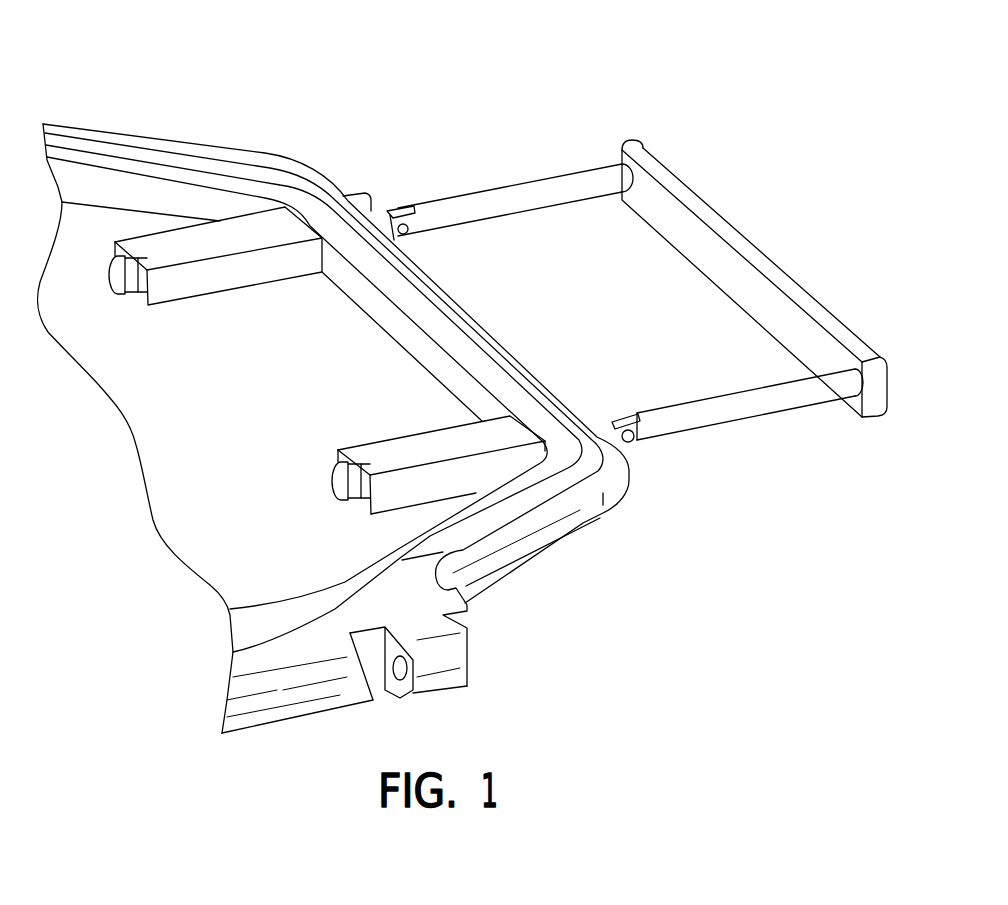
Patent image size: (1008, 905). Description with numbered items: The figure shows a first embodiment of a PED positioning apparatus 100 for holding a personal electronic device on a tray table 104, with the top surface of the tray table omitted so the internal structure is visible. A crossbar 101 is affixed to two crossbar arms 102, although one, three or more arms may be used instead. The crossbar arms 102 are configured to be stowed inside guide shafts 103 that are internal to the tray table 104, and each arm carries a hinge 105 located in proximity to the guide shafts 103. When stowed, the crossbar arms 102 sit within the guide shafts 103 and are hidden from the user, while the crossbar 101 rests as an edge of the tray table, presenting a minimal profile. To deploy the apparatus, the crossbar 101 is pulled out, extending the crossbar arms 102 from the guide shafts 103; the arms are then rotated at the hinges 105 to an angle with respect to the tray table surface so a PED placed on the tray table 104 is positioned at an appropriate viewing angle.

The PED positioning apparatus 100 is at (472, 113).
The crossbar 101 is at (692, 178).
The crossbar arms 102 is at (760, 424).
The guide shafts 103 is at (227, 220).
The tray table 104 is at (186, 148).
The hinges 105 is at (634, 446).